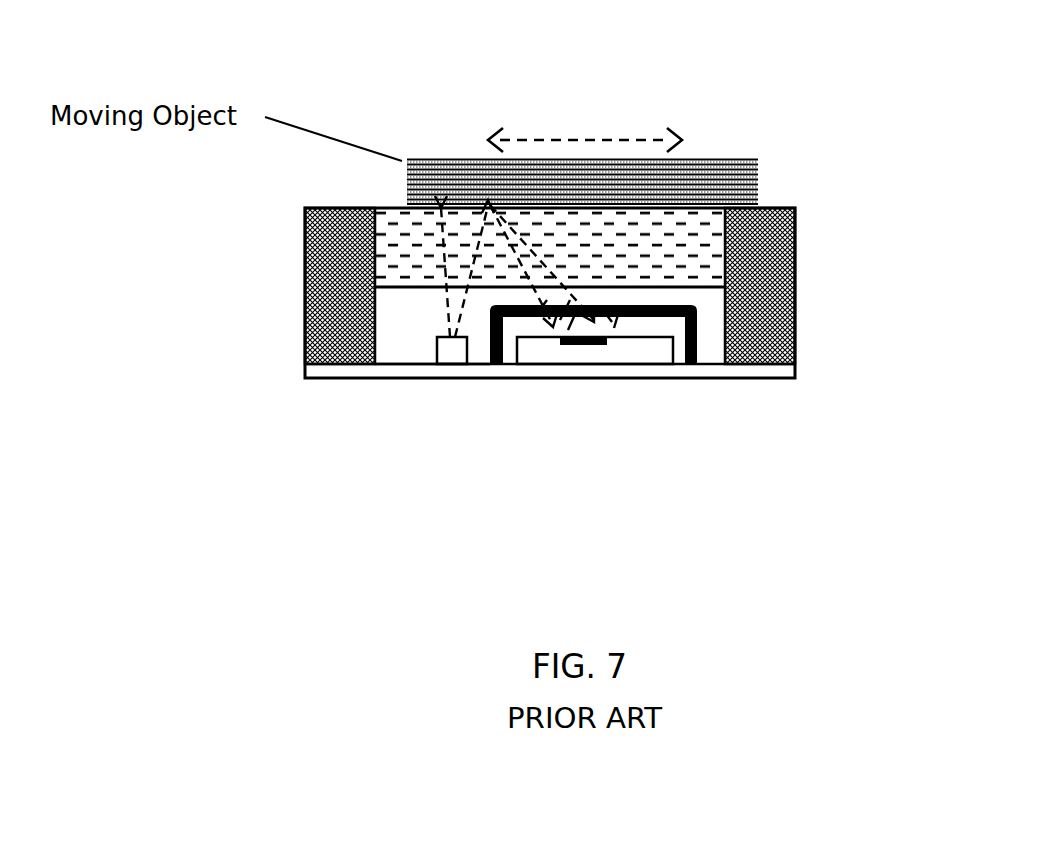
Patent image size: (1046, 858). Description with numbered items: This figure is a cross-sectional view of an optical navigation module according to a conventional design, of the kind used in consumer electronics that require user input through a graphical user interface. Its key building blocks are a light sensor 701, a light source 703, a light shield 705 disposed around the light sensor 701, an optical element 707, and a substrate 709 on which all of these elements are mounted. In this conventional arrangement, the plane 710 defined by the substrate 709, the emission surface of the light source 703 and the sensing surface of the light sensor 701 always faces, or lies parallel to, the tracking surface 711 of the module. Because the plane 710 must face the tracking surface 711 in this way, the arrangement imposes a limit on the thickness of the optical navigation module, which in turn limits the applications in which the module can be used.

The light sensor 701 is at (663, 347).
The light source 703 is at (448, 355).
The light shield 705 is at (628, 305).
The optical element 707 is at (305, 268).
The substrate 709 is at (590, 368).
The plane 710 is at (397, 363).
The tracking surface 711 is at (776, 193).